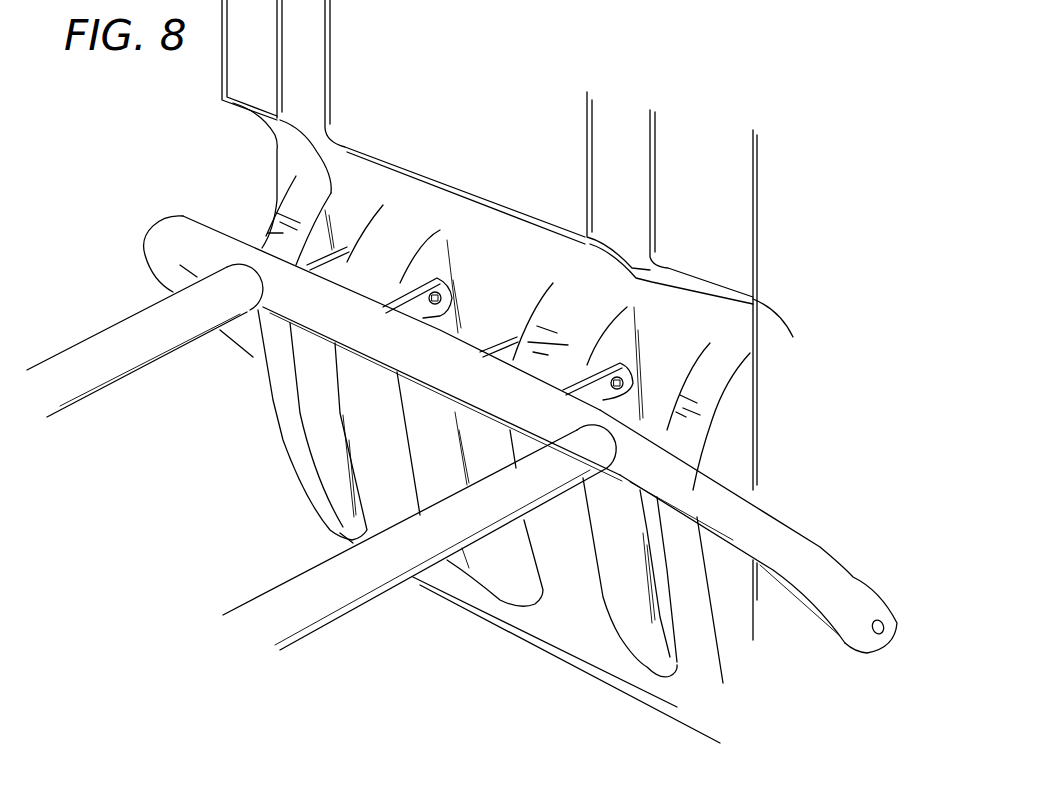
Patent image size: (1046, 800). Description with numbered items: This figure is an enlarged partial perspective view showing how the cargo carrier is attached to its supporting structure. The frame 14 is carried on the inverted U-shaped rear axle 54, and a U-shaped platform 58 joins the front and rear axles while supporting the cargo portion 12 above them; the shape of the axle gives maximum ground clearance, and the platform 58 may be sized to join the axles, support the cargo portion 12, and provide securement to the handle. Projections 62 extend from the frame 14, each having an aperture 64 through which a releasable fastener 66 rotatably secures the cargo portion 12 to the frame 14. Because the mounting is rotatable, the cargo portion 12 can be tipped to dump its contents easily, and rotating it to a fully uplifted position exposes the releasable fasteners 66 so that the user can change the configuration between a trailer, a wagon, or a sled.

The cargo portion 12 is at (478, 152).
The frame 14 is at (140, 378).
The rear axle 54 is at (813, 560).
The platform 58 is at (363, 572).
The projections 62 is at (280, 212).
The apertures 64 is at (623, 363).
The releasable fasteners 66 is at (441, 295).